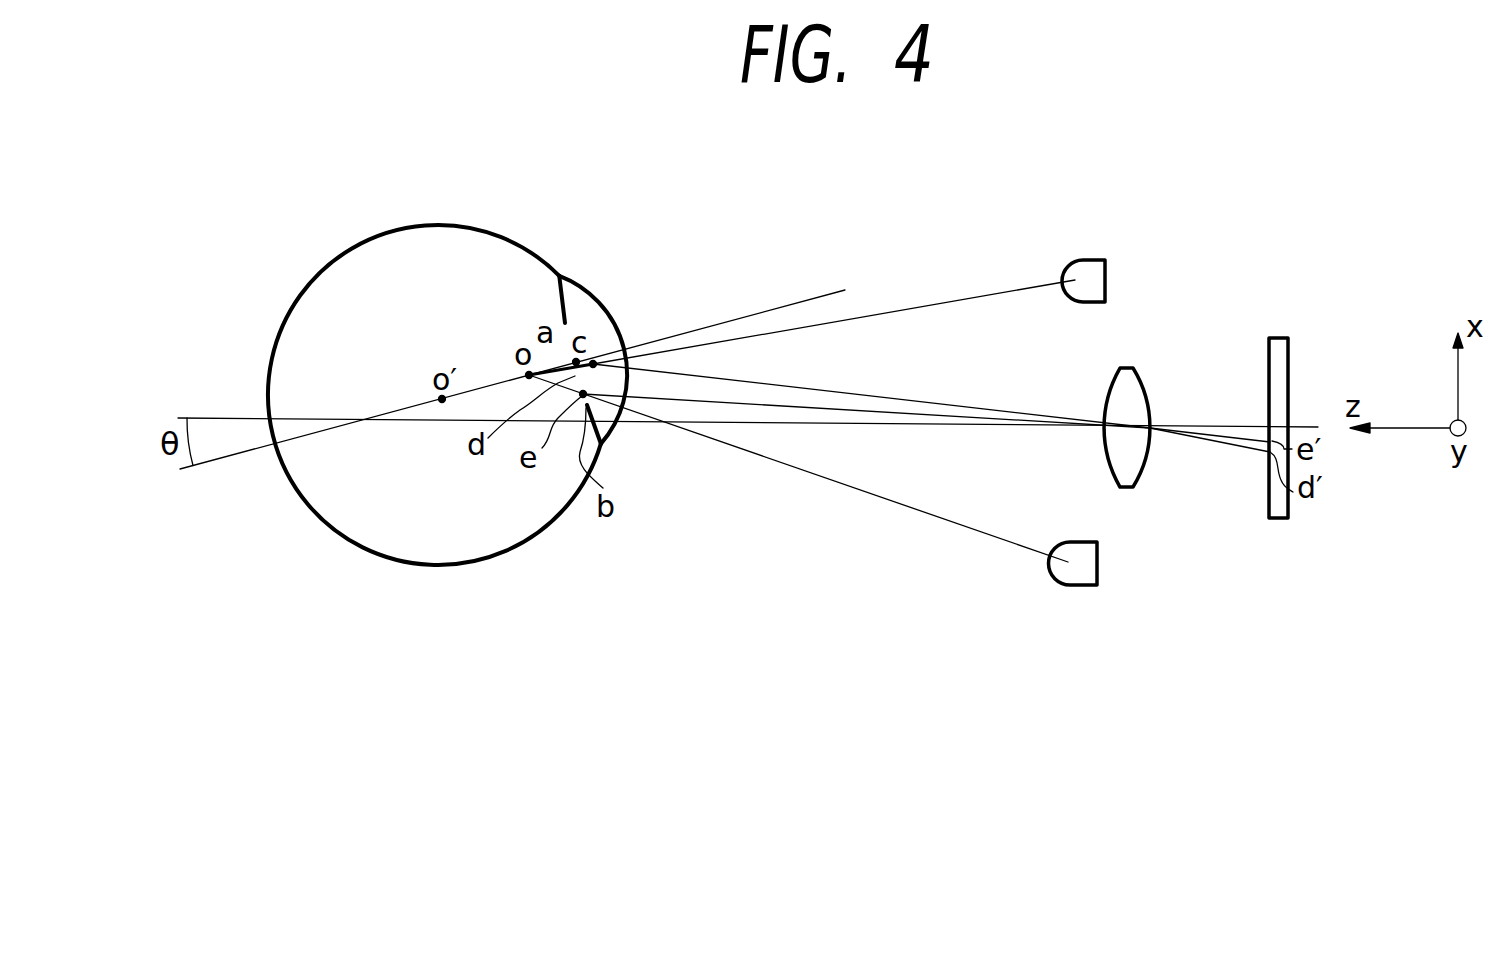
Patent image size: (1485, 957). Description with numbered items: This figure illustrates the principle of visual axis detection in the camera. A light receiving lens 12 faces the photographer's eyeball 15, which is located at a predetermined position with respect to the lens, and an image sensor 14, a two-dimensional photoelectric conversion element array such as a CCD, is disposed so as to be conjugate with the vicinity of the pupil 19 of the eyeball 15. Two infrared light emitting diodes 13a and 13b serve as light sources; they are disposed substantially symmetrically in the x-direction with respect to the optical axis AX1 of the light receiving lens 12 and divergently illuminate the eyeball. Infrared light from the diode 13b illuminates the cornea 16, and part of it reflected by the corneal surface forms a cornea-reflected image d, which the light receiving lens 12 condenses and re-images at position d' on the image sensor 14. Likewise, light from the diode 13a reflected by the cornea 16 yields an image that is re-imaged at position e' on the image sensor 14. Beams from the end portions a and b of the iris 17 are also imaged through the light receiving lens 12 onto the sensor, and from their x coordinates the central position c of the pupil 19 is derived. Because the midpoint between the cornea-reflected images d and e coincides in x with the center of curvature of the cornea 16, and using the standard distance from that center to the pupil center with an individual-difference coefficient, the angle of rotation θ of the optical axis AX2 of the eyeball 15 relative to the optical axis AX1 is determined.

The light receiving lens 12 is at (1145, 470).
The infrared light emitting diode 13a is at (1090, 586).
The infrared light emitting diode 13b is at (1101, 256).
The image sensor 14 is at (1289, 336).
The eyeball 15 is at (465, 558).
The cornea 16 is at (599, 290).
The iris 17 is at (566, 292).
The pupil 19 is at (566, 332).
The optical axis of the light receiving lens AX1 is at (877, 428).
The optical axis of the eyeball AX2 is at (800, 304).